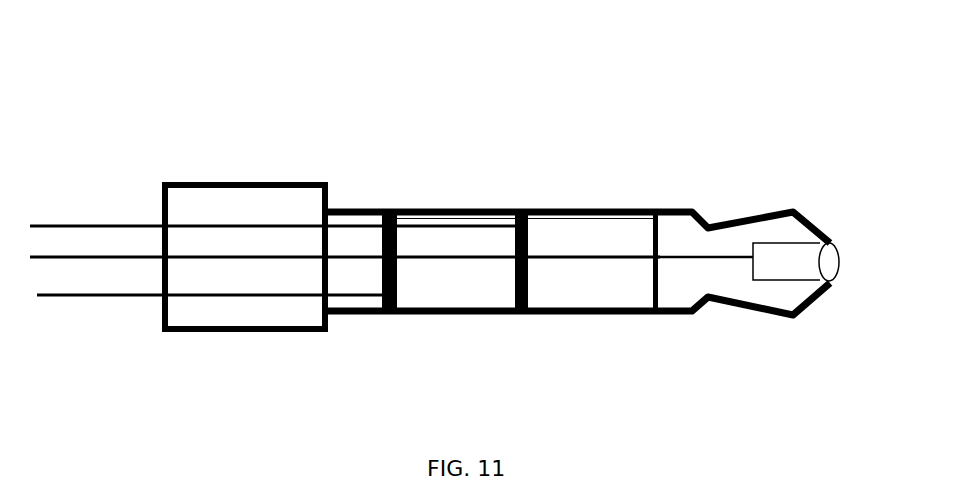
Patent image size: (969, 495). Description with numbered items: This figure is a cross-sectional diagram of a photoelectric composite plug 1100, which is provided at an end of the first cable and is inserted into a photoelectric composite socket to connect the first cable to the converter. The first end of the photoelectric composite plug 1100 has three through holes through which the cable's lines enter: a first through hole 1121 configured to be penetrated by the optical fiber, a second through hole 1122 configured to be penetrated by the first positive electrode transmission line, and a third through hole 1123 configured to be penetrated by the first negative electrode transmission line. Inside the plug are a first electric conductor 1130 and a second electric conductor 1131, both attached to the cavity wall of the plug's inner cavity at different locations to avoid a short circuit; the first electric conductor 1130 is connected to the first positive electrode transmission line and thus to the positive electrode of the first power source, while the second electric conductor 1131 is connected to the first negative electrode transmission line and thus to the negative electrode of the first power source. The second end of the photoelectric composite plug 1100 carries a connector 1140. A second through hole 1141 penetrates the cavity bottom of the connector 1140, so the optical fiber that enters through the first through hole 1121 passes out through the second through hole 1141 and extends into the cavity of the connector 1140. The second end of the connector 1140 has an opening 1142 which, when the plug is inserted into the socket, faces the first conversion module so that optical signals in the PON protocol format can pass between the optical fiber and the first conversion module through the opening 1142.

The photoelectric composite plug 1100 is at (412, 92).
The first through hole 1121 is at (163, 258).
The second through hole 1122 is at (163, 228).
The third through hole 1123 is at (163, 296).
The first electric conductor 1130 is at (530, 217).
The second electric conductor 1131 is at (397, 288).
The connector 1140 is at (792, 242).
The second through hole 1141 is at (753, 253).
The opening 1142 is at (828, 257).